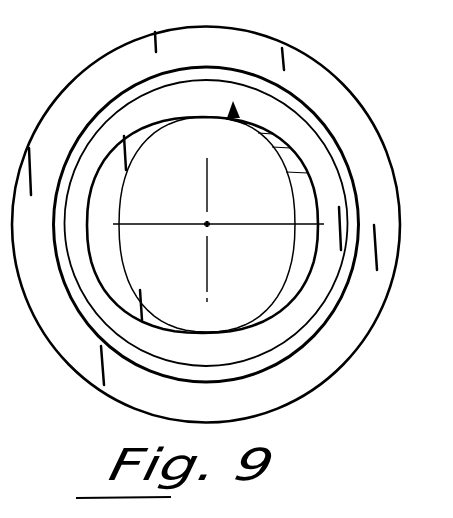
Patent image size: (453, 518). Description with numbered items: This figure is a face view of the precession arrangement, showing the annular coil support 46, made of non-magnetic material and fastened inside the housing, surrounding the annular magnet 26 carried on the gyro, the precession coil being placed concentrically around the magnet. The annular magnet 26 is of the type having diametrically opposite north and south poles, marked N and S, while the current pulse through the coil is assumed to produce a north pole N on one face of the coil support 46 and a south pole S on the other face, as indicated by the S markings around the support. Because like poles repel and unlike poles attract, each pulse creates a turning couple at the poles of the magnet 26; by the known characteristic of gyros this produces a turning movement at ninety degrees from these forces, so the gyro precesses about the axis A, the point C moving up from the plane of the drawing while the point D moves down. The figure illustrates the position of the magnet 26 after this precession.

The annular coil support 46 is at (288, 43).
The annular magnet 26 is at (240, 330).
The south pole S is at (209, 225).
The north pole N is at (208, 100).
The axis A is at (208, 219).
The point C is at (154, 225).
The point D is at (270, 219).